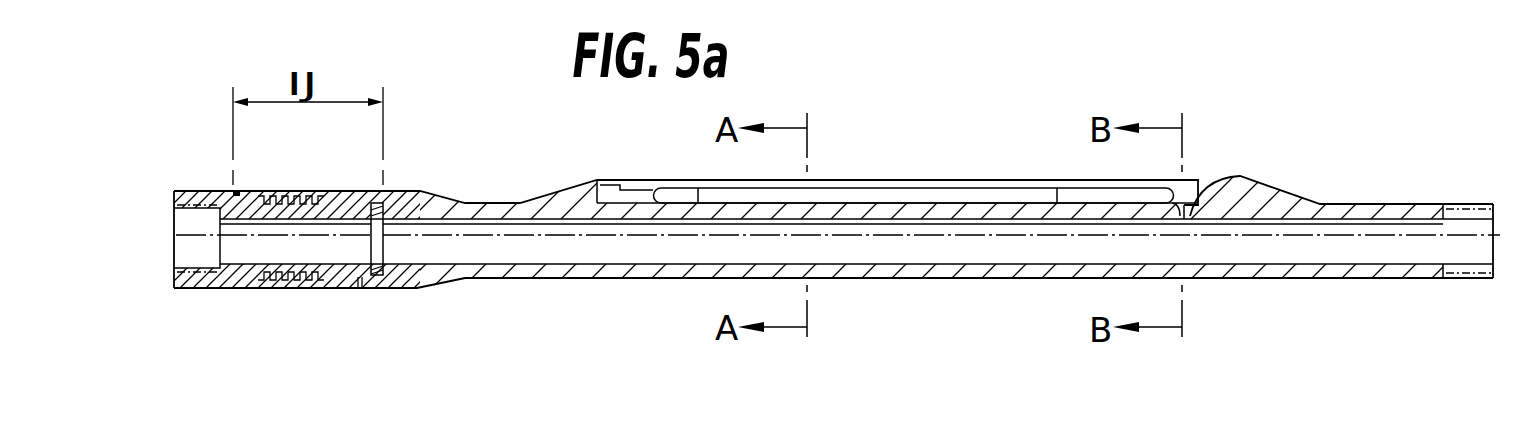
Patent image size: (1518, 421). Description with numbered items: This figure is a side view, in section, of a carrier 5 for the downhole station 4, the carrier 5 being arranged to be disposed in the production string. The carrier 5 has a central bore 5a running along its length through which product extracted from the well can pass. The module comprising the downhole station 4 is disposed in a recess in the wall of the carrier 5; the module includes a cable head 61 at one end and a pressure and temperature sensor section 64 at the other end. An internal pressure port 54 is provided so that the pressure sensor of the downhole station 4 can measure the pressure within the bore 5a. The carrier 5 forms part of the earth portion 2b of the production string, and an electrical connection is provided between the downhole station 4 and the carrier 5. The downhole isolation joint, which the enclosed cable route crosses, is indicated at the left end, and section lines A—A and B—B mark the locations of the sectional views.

The carrier 5 is at (837, 249).
The central bore 5a is at (562, 250).
The earth portion of the production string 2b is at (978, 280).
The cable head 61 is at (678, 190).
The downhole station 4 is at (918, 190).
The pressure and temperature sensor section 64 is at (1090, 193).
The internal pressure port 54 is at (1240, 179).